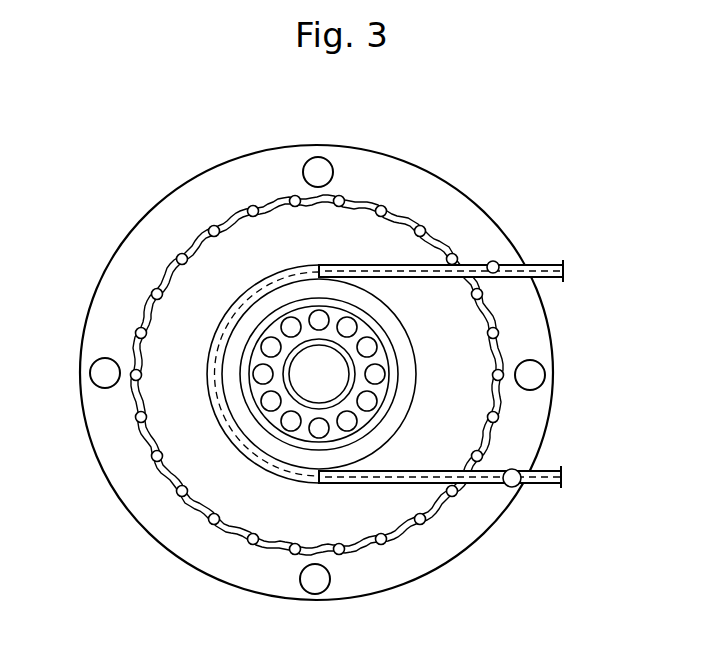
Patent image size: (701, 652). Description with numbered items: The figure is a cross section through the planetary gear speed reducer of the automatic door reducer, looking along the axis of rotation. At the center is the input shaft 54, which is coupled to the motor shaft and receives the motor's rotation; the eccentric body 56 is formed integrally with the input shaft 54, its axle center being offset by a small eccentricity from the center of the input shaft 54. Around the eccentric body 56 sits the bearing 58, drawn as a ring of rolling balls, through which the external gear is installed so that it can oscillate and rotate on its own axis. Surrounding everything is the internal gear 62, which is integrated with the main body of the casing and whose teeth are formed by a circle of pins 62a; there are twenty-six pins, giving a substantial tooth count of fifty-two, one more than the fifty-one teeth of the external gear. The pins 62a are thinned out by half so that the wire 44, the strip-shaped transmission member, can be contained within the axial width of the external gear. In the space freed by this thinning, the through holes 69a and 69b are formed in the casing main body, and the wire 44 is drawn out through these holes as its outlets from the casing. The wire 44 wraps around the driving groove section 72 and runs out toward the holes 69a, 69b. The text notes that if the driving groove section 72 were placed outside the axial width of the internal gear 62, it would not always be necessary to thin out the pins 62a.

The wire 44 is at (552, 266).
The input shaft 54 is at (440, 313).
The eccentric body 56 is at (317, 393).
The bearing 58 is at (384, 374).
The internal gear 62 is at (372, 168).
The pins 62a is at (385, 206).
The through hole 69a is at (494, 261).
The through hole 69b is at (518, 486).
The driving groove section 72 is at (277, 281).